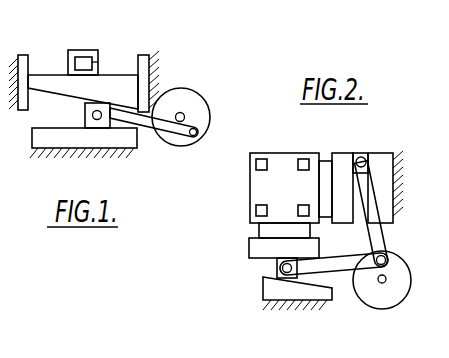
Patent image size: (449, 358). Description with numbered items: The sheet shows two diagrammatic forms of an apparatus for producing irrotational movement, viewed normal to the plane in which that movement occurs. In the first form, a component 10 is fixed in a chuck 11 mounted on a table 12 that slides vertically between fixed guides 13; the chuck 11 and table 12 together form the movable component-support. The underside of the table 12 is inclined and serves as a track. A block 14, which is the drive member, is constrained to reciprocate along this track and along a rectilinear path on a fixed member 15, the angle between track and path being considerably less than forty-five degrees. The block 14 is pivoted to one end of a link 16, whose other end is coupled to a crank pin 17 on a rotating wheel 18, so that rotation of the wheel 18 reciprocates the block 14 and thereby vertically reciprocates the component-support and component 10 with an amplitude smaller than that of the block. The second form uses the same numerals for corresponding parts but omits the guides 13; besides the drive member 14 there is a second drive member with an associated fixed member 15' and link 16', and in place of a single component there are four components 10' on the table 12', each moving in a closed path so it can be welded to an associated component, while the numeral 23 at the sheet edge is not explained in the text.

In FIG. 1, the component 10 is at (101, 42).
In FIG. 1, the chuck 11 is at (74, 50).
In FIG. 1, the table 12 is at (94, 62).
In FIG. 1, the fixed guides 13 is at (22, 56).
In FIG. 1, the block 14 is at (93, 124).
In FIG. 2, the block 14 is at (361, 157).
In FIG. 1, the fixed member 15 is at (83, 162).
In FIG. 2, the fixed member 15 is at (289, 286).
In FIG. 1, the link 16 is at (154, 146).
In FIG. 2, the link 16 is at (334, 301).
In FIG. 1, the crank pin 17 is at (198, 128).
In FIG. 2, the crank pin 17 is at (395, 259).
In FIG. 1, the rotating wheel 18 is at (186, 98).
In FIG. 2, the rotating wheel 18 is at (398, 293).
In FIG. 2, the components 10' is at (263, 177).
In FIG. 2, the plate 12' is at (268, 188).
In FIG. 2, the fixed member 15' is at (405, 187).
In FIG. 2, the link 16' is at (393, 214).
In FIG. 2, the element 23 is at (438, 100).